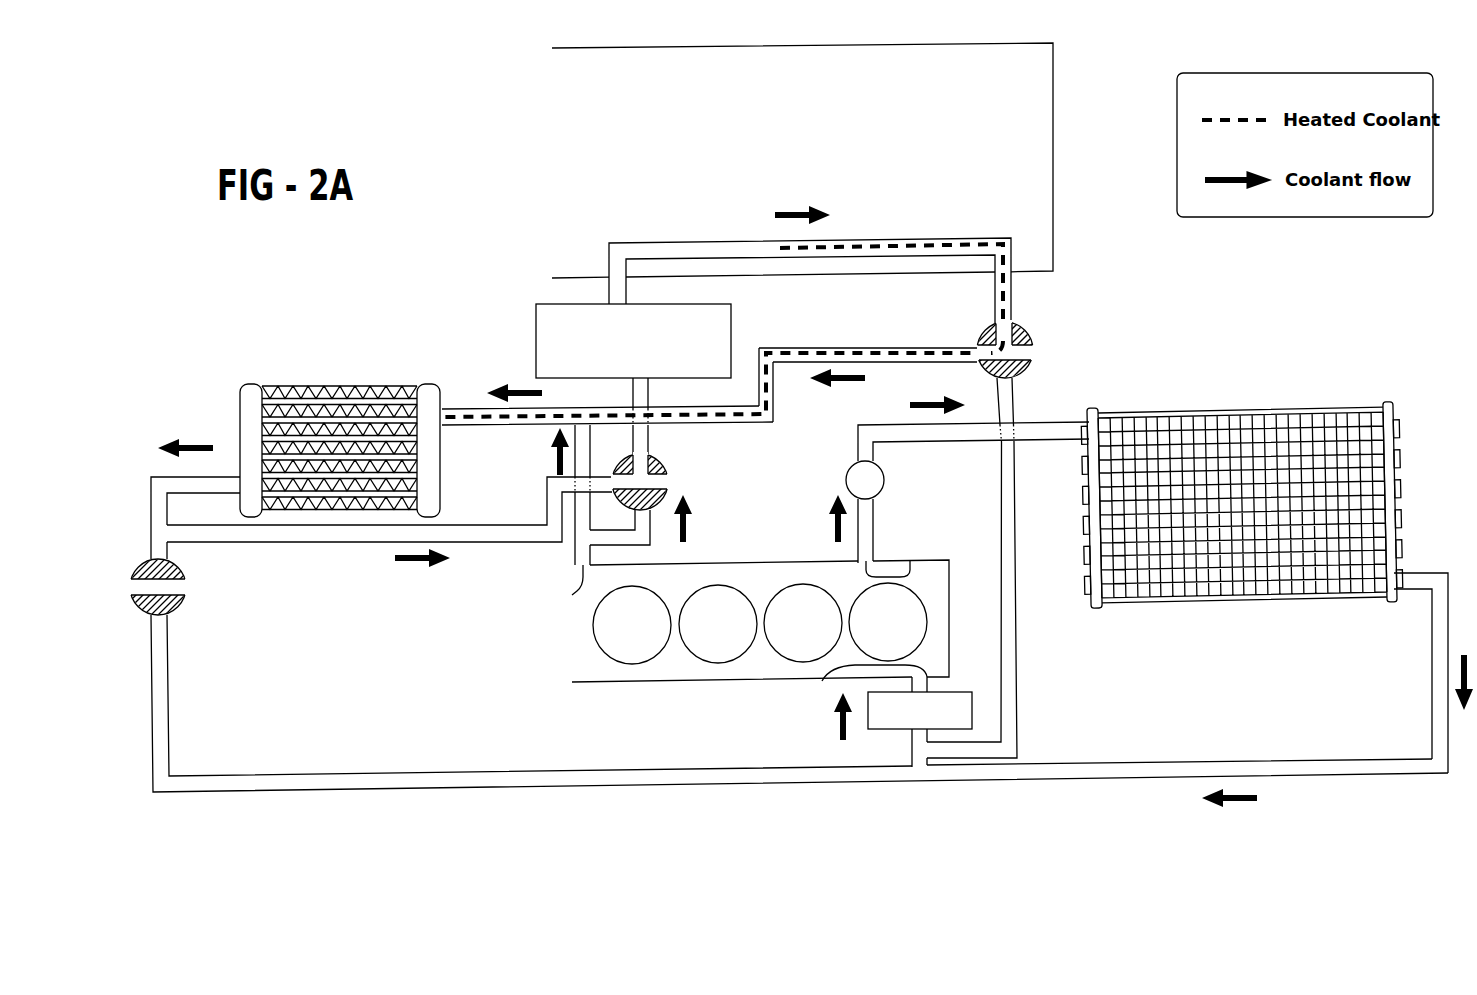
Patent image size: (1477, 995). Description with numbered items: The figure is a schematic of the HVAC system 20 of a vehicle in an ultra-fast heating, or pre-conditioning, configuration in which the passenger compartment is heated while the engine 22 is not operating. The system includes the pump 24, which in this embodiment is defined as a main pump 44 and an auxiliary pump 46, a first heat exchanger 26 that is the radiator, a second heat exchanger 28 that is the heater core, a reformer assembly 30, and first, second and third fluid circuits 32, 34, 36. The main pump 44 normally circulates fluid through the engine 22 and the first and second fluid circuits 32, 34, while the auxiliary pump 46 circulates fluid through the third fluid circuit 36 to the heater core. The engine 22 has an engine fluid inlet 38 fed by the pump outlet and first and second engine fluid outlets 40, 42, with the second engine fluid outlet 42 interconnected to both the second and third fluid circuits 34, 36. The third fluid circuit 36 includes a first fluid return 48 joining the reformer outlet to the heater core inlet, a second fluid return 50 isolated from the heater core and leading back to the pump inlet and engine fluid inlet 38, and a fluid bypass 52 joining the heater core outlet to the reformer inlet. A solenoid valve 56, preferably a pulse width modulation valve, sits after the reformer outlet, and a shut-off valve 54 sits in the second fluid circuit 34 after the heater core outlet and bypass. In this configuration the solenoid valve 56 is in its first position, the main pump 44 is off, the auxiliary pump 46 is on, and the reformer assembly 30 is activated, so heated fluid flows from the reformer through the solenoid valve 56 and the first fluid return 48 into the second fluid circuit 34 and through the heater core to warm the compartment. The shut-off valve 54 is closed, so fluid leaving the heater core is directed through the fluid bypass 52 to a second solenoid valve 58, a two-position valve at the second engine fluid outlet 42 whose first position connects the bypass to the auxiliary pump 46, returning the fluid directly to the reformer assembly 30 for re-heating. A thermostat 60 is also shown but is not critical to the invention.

The HVAC system 20 is at (1096, 124).
The engine 22 is at (693, 681).
The pump 24 is at (511, 330).
The first heat exchanger 26 is at (1193, 606).
The second heat exchanger 28 is at (335, 384).
The reformer assembly 30 is at (552, 111).
The first fluid circuit 32 is at (875, 530).
The second fluid circuit 34 is at (496, 426).
The third fluid circuit 36 is at (956, 242).
The engine fluid inlet 38 is at (825, 681).
The first engine fluid outlet 40 is at (907, 562).
The second engine fluid outlet 42 is at (572, 594).
The main pump 44 is at (878, 730).
The auxiliary pump 46 is at (732, 327).
The first fluid return 48 is at (895, 363).
The second fluid return 50 is at (1014, 410).
The fluid bypass 52 is at (362, 542).
The shut-off valve 54 is at (186, 572).
The solenoid valve 56 is at (1033, 336).
The second solenoid valve 58 is at (668, 478).
The thermostat 60 is at (850, 466).